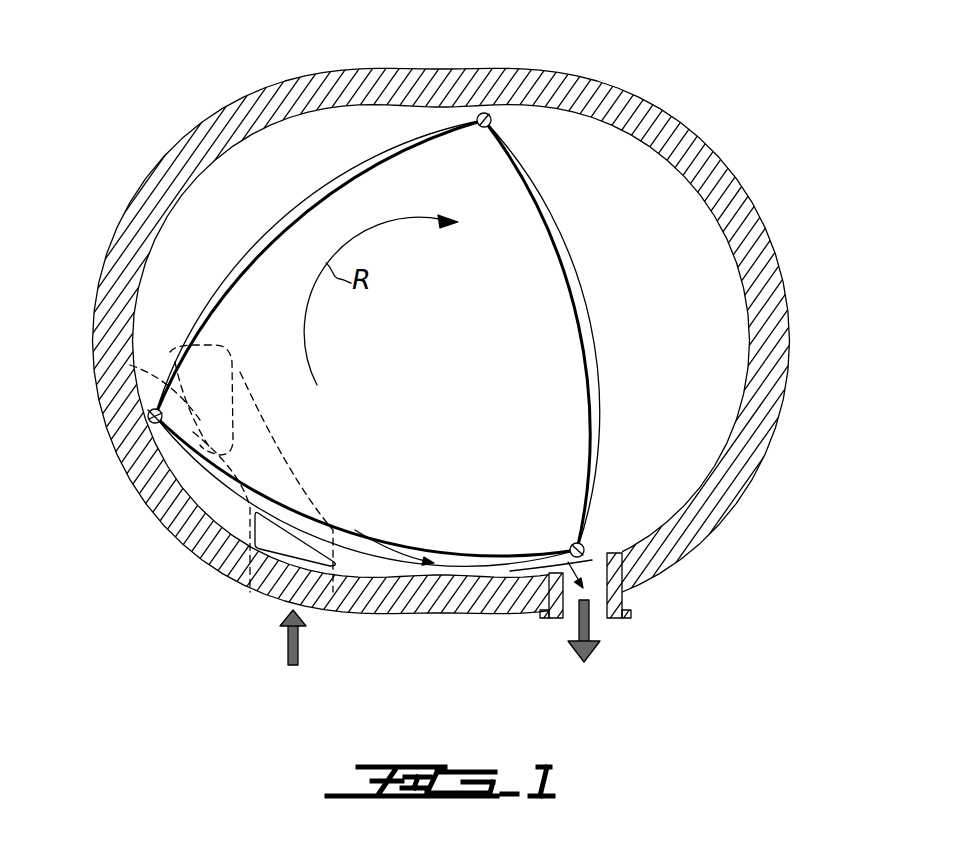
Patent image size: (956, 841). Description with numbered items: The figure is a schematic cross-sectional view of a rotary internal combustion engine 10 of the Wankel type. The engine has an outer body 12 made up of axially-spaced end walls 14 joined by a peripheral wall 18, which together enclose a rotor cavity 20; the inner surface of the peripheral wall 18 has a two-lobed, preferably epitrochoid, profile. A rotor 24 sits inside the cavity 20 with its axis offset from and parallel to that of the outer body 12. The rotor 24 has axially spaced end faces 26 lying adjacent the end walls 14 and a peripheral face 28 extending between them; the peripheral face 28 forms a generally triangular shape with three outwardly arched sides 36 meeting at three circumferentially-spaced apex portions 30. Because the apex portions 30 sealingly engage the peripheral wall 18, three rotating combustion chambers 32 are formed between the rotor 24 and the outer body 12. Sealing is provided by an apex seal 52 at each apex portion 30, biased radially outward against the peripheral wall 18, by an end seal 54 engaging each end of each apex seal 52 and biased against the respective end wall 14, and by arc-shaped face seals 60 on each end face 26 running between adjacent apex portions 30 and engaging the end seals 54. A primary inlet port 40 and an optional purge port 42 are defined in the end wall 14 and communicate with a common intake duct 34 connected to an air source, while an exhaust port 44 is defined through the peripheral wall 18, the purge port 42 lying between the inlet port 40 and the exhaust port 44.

The rotary internal combustion engine 10 is at (122, 127).
The outer body 12 is at (718, 156).
The end wall 14 is at (683, 243).
The peripheral wall 18 is at (764, 320).
The rotor cavity 20 is at (675, 405).
The rotor 24 is at (533, 158).
The end face 26 is at (480, 111).
The peripheral face 28 is at (460, 160).
The apex portion 30 is at (600, 548).
The combustion chamber 32 is at (294, 180).
The intake duct 34 is at (228, 518).
The outwardly arched side 36 is at (255, 240).
The primary inlet port 40 is at (195, 375).
The purge port 42 is at (288, 545).
The exhaust port 44 is at (597, 608).
The apex seal 52 is at (149, 418).
The end seal 54 is at (152, 410).
The face seal 60 is at (196, 452).